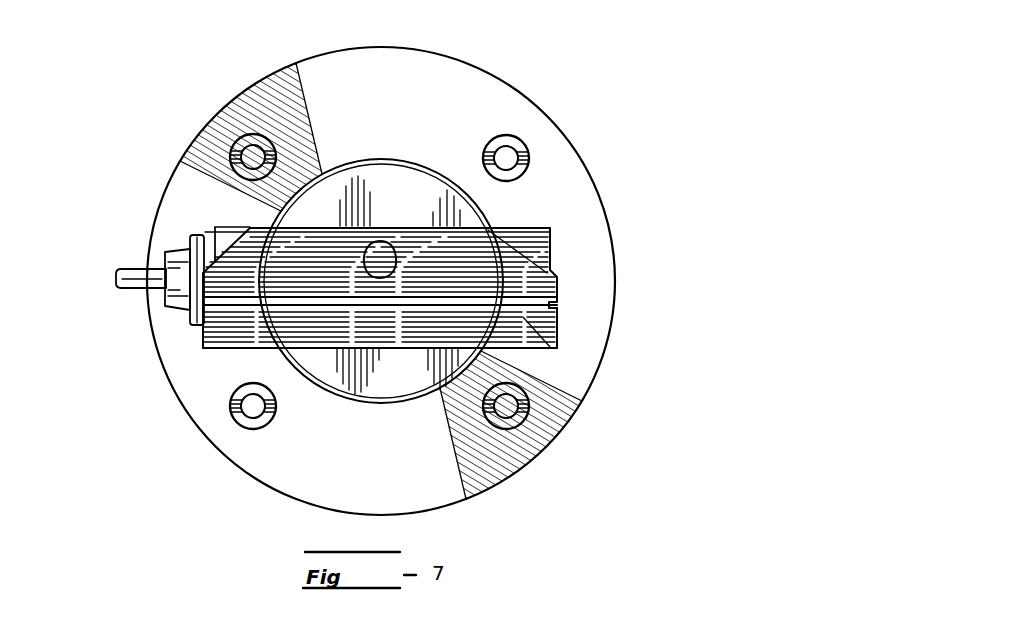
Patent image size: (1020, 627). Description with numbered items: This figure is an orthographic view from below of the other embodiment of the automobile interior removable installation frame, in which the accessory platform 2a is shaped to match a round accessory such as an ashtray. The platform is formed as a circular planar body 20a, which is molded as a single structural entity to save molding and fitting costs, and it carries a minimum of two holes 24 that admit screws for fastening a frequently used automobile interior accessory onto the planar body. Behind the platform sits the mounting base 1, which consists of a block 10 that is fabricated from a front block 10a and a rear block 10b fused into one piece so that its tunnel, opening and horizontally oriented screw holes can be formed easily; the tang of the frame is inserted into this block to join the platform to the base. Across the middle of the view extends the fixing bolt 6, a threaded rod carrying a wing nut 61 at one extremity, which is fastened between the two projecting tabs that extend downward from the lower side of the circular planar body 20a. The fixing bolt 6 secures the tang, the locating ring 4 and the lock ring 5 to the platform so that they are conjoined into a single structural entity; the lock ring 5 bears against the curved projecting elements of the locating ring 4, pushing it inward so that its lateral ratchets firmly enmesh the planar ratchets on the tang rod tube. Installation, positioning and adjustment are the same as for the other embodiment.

The mounting base 1 is at (620, 292).
The block 10 is at (182, 413).
The front block 10a is at (490, 251).
The rear block 10b is at (527, 326).
The accessory platform 2a is at (578, 416).
The circular planar body 20a is at (454, 110).
The holes 24 is at (508, 148).
The locating ring 4 is at (194, 224).
The lock ring 5 is at (258, 223).
The fixing bolt 6 is at (160, 245).
The wing nut 61 is at (162, 284).